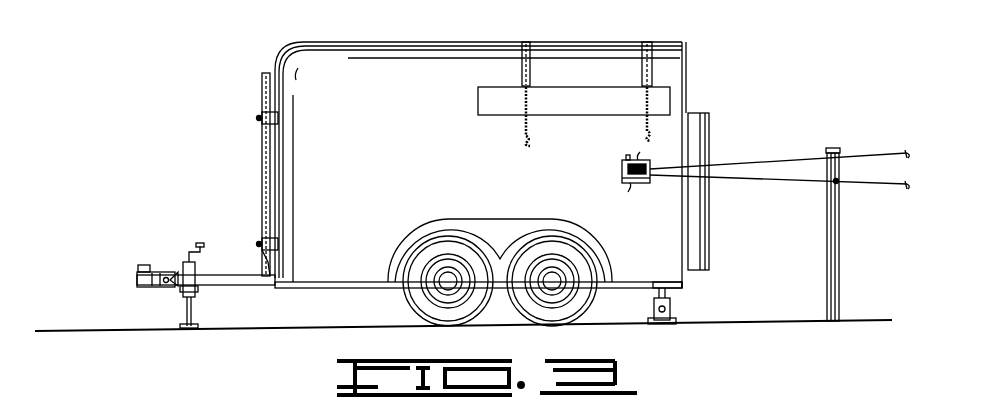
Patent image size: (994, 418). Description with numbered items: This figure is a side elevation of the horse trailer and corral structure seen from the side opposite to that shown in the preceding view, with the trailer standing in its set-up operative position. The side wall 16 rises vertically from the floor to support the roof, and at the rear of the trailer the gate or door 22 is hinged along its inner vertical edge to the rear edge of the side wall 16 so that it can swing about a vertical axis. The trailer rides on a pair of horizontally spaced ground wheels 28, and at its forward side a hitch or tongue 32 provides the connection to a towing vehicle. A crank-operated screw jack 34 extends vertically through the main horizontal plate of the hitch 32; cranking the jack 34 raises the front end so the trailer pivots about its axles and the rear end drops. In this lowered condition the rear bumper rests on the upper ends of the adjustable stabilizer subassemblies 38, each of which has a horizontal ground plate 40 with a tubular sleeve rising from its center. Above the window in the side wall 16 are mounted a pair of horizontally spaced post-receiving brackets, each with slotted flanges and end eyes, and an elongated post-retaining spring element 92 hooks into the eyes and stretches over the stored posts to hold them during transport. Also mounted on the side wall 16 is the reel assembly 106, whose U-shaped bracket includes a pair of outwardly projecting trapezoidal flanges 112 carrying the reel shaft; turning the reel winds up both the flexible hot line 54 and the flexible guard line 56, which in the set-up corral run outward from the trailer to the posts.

The side wall 16 is at (414, 159).
The gate or door 22 is at (698, 217).
The ground wheels 28 is at (422, 300).
The hitch or tongue 32 is at (160, 290).
The crank-operated screw jack 34 is at (200, 292).
The adjustable stabilizer subassembly 38 is at (650, 300).
The ground plate 40 is at (660, 326).
The flexible hot line 54 is at (864, 186).
The warning or guard line 56 is at (863, 153).
The post-retaining spring element 92 is at (528, 108).
The reel assembly 106 is at (620, 167).
The trapezoidal flange 112 is at (640, 152).